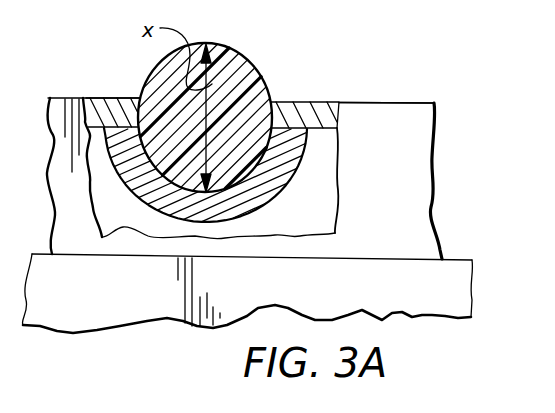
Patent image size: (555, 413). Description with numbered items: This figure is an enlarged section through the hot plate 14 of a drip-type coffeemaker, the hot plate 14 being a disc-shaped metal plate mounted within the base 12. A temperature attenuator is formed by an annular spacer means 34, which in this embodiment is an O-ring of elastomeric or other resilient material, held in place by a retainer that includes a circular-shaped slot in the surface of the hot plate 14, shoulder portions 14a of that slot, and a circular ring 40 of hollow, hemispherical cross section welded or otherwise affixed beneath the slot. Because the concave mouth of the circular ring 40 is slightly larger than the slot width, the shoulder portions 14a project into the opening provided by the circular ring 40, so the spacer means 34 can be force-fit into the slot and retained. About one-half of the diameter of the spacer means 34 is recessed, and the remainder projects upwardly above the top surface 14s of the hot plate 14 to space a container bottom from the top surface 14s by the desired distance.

The base 12 is at (452, 288).
The hot plate 14 is at (412, 127).
The shoulder portions 14a is at (141, 94).
The top surface 14s is at (370, 102).
The annular spacer means 34 is at (248, 73).
The circular ring 40 is at (280, 177).